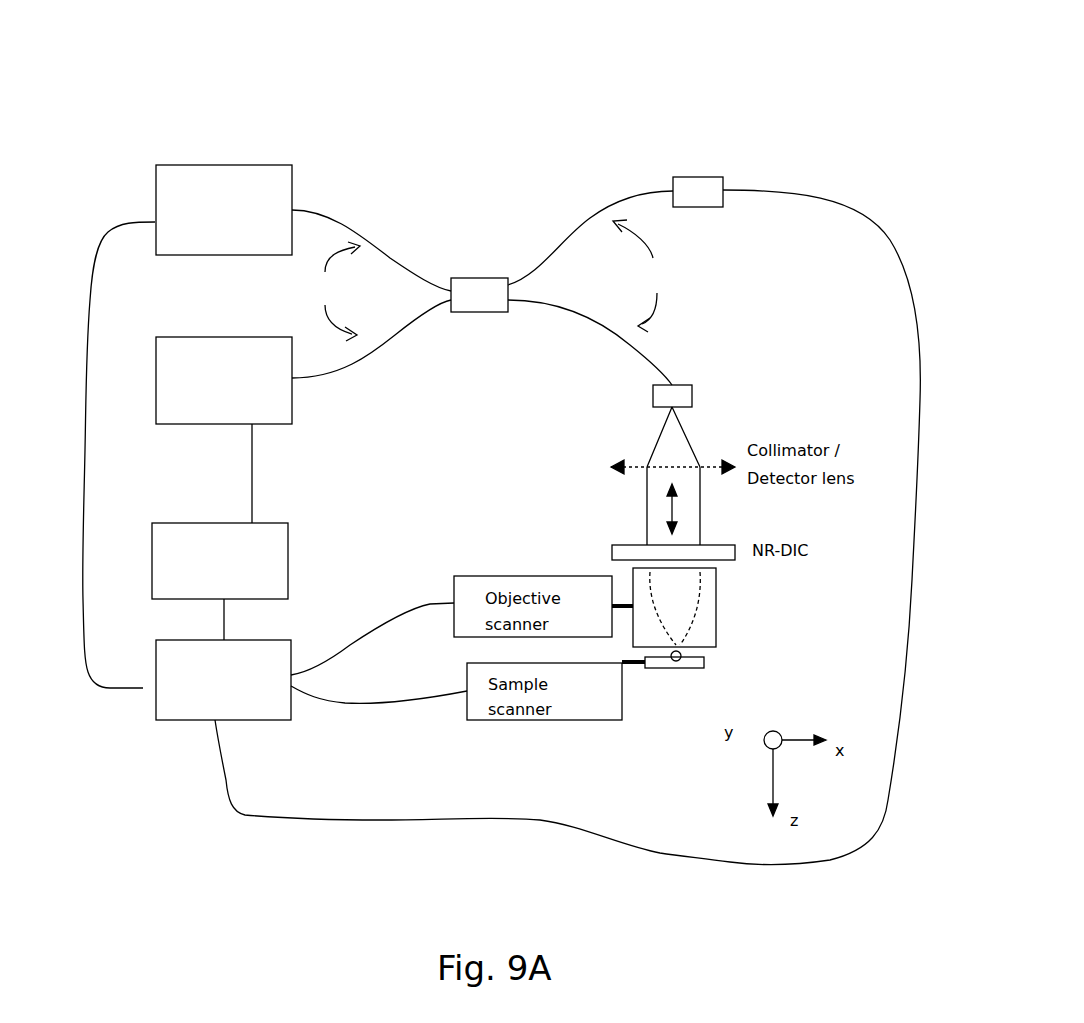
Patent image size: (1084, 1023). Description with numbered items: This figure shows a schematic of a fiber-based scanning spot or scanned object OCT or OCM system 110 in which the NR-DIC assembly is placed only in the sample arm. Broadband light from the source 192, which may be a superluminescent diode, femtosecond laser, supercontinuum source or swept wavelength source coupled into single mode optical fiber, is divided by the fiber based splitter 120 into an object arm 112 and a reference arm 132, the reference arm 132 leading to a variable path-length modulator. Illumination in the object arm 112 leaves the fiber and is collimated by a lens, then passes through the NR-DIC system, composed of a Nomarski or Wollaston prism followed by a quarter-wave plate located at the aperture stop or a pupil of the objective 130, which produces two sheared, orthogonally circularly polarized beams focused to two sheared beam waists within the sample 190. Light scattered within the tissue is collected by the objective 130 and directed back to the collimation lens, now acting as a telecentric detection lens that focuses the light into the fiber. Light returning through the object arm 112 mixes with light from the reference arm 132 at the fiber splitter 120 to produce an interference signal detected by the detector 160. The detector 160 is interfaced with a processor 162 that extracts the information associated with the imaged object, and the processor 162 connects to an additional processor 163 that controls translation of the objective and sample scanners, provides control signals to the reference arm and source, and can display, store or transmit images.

The low-coherence interferometric microscope system 110 is at (372, 90).
The source 192 is at (154, 208).
The detector 160 is at (193, 430).
The processor 162 is at (220, 511).
The additional processor 163 is at (311, 659).
The fiber based splitter 120 is at (474, 248).
The object arm 112 is at (483, 342).
The reference arm 132 is at (729, 173).
The objective 130 is at (720, 628).
The sample 190 is at (700, 680).